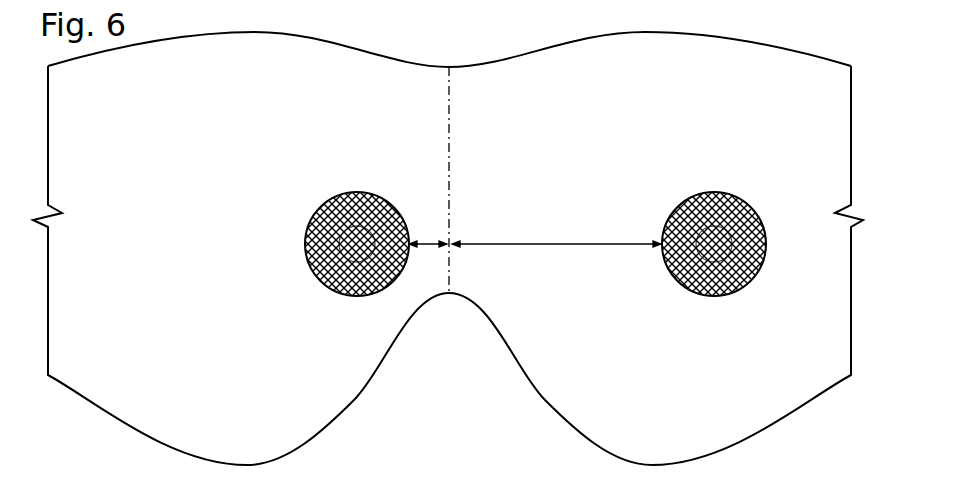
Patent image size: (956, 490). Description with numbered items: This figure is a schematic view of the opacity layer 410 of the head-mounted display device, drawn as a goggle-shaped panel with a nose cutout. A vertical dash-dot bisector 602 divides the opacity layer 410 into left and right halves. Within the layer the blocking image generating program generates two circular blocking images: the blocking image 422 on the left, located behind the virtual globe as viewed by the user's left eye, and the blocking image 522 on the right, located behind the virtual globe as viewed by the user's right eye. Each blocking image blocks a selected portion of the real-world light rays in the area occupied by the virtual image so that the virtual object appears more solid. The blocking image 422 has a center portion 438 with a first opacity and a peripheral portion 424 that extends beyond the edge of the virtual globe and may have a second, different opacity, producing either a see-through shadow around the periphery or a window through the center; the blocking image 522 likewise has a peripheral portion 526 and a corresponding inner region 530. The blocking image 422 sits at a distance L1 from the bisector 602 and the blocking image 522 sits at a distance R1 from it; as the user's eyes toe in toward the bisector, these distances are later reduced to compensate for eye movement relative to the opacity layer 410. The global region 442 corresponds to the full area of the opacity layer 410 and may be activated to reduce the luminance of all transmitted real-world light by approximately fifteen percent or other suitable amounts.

The opacity layer 410 is at (259, 437).
The global region 442 is at (316, 50).
The bisector 602 is at (451, 118).
The blocking image 422 is at (349, 176).
The peripheral portion 424 is at (343, 295).
The center portion 438 is at (318, 228).
The blocking image 522 is at (712, 176).
The peripheral portion 526 is at (700, 294).
The right inner region 530 is at (766, 262).
The distance L1 is at (432, 242).
The distance R1 is at (557, 243).